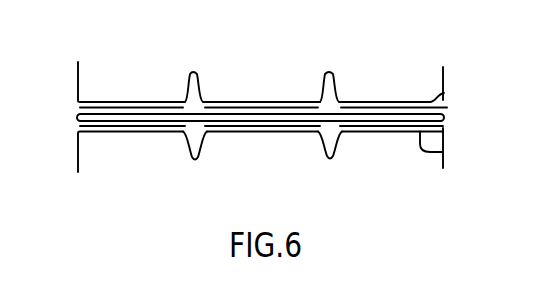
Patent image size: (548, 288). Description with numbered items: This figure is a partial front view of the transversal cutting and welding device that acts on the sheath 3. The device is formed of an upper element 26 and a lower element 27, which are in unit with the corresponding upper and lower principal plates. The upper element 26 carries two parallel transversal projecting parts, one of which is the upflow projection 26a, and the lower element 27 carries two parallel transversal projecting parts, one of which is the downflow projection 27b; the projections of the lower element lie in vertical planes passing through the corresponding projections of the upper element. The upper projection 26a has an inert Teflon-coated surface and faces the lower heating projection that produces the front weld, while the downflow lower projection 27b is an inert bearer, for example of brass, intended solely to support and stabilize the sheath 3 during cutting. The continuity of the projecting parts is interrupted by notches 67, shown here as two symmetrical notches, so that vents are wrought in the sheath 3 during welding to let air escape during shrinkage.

The sheath 3 is at (446, 117).
The upper element 26 is at (425, 80).
The upflow projecting part of upper element 26a is at (444, 90).
The lower element 27 is at (383, 140).
The downflow projecting part of lower element 27b is at (443, 152).
The notch 67 is at (323, 78).